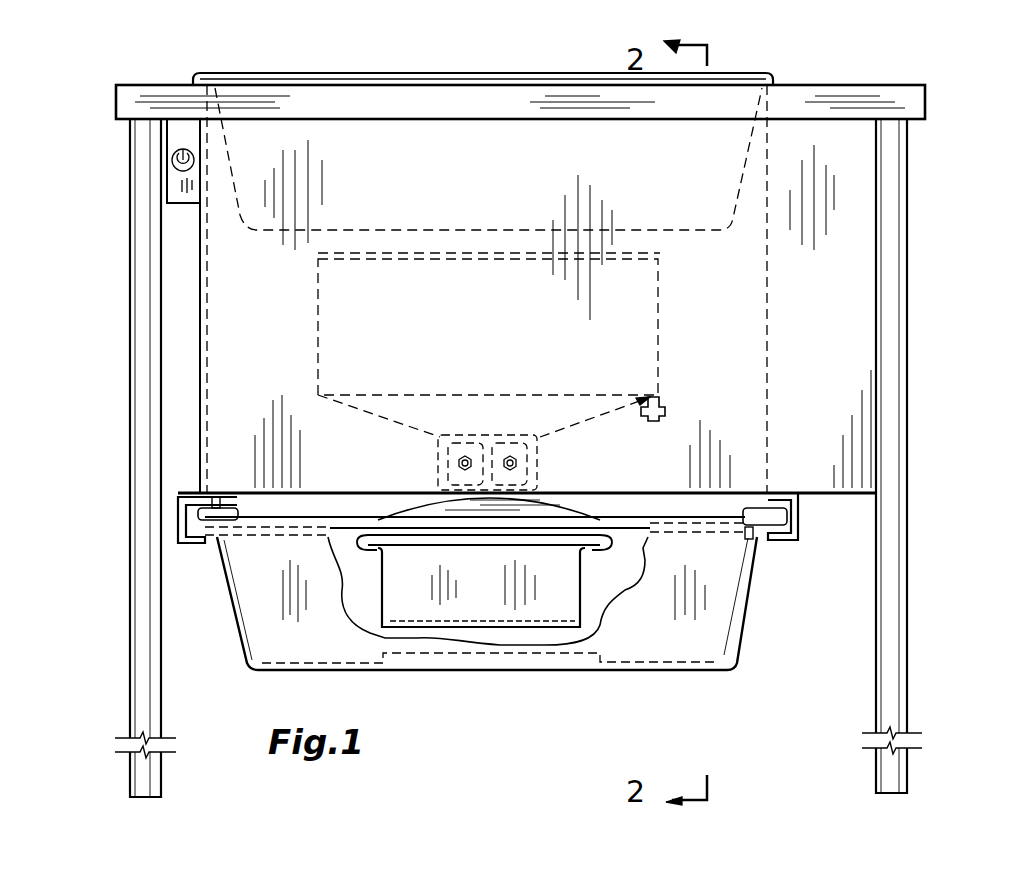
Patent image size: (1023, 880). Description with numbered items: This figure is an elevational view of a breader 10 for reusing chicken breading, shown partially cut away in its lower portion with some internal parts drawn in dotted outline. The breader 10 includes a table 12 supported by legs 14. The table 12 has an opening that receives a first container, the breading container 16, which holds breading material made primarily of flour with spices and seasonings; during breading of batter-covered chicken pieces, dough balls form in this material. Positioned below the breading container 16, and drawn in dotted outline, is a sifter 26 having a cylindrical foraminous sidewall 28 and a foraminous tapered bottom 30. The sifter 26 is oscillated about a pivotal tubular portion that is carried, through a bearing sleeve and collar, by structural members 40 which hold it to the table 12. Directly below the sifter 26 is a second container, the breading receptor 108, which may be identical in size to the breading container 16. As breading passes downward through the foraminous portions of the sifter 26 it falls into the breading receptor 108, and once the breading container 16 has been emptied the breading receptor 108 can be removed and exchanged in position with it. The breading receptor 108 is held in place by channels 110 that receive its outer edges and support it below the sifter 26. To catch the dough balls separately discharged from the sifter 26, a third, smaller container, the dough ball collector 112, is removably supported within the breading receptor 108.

The breader 10 is at (940, 98).
The table 12 is at (878, 100).
The legs 14 is at (150, 370).
The breading container 16 is at (758, 78).
The sifter 26 is at (660, 253).
The cylindrical foraminous sidewall 28 is at (656, 308).
The foraminous tapered bottom 30 is at (578, 417).
The structural members 40 is at (440, 465).
The breading receptor 108 is at (722, 613).
The channels 110 is at (203, 538).
The dough ball collector 112 is at (570, 593).